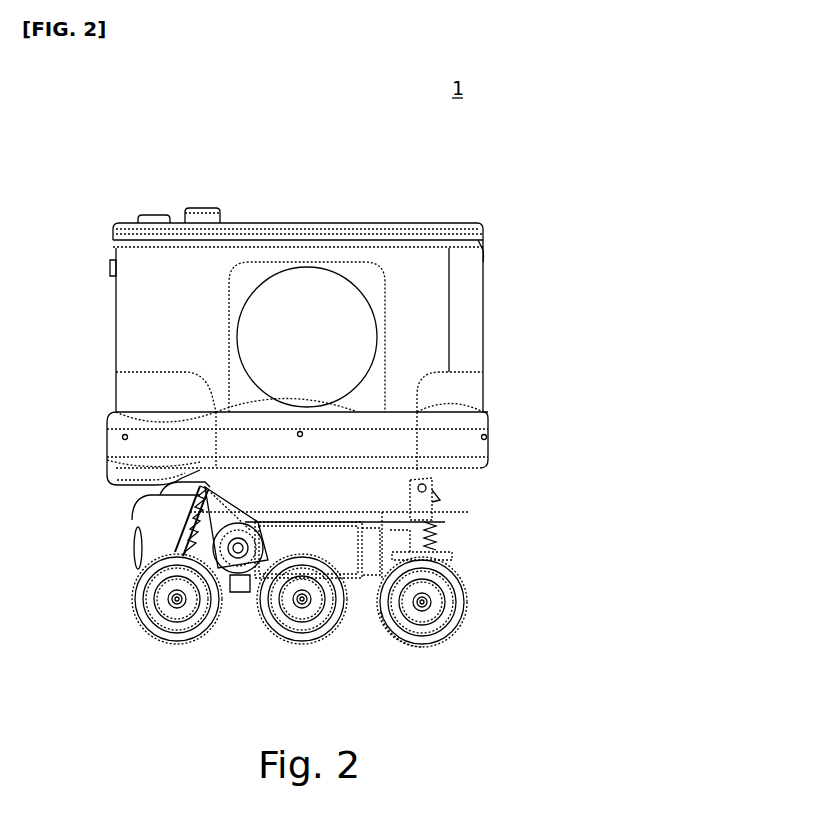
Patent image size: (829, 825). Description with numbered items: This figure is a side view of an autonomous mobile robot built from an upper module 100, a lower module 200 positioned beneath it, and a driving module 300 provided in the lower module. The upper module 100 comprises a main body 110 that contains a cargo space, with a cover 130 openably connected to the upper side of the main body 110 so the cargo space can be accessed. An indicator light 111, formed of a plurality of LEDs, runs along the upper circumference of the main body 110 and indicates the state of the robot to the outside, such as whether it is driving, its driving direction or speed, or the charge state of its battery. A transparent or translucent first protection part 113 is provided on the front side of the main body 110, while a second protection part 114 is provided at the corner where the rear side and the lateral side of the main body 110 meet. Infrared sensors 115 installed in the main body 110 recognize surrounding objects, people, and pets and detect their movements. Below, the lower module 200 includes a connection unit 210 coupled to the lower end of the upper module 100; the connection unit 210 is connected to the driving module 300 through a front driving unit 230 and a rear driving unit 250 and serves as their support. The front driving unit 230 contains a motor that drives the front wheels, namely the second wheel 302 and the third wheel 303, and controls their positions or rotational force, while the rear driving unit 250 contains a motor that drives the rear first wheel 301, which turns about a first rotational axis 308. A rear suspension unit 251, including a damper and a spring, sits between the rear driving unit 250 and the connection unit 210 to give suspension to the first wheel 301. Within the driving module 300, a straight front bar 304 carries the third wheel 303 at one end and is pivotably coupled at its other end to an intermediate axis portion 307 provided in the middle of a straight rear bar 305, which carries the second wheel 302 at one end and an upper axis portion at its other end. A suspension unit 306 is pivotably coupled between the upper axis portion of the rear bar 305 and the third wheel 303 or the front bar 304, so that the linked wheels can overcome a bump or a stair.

The upper module 100 is at (313, 336).
The main body 110 is at (484, 330).
The indicator light 111 is at (483, 250).
The first protection part 113 is at (125, 385).
The second protection part 114 is at (470, 382).
The infrared sensor 115 is at (140, 412).
The cover 130 is at (392, 222).
The lower module 200 is at (310, 525).
The connection unit 210 is at (160, 462).
The front driving unit 230 is at (140, 548).
The rear driving unit 250 is at (445, 557).
The rear suspension unit 251 is at (438, 528).
The driving module 300 is at (301, 591).
The first wheel 301 is at (408, 640).
The second wheel 302 is at (302, 635).
The third wheel 303 is at (170, 640).
The front bar 304 is at (237, 612).
The rear bar 305 is at (190, 490).
The suspension unit 306 is at (150, 512).
The intermediate axis portion 307 is at (240, 605).
The first rotational axis 308 is at (420, 645).